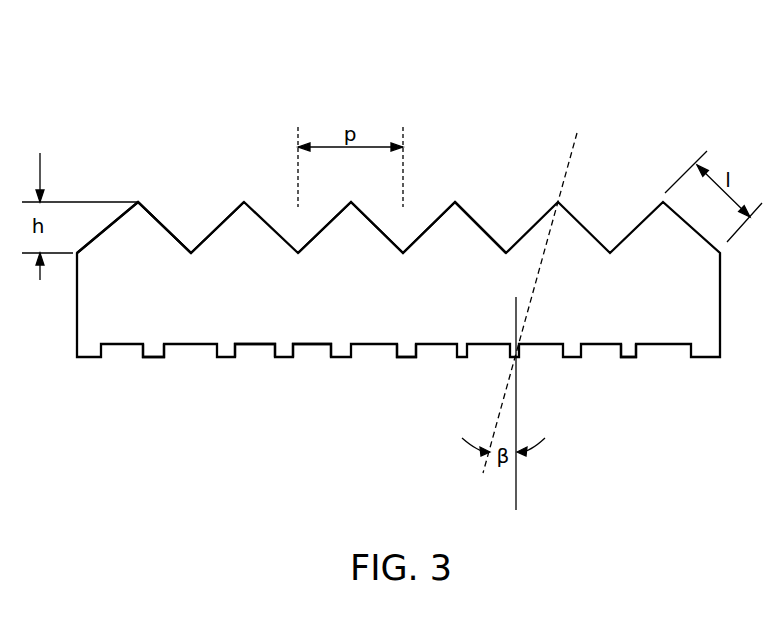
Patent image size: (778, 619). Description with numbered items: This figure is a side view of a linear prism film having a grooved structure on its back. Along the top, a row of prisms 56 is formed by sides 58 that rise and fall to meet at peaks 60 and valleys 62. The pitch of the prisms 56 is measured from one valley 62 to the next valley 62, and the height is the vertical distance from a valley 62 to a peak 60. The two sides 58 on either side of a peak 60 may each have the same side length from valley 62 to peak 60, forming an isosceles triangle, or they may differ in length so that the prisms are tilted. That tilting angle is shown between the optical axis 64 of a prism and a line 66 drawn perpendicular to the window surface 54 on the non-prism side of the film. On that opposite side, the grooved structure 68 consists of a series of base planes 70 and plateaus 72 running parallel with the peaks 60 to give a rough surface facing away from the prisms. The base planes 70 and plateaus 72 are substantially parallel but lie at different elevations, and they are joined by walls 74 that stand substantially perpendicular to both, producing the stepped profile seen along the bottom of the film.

The window surface 54 is at (154, 358).
The prisms 56 is at (470, 213).
The sides 58 is at (360, 210).
The peak 60 is at (138, 201).
The valley 62 is at (192, 251).
The optical axis 64 is at (500, 414).
The line perpendicular to window side 66 is at (516, 485).
The grooved structure 68 is at (626, 358).
The base planes 70 is at (313, 346).
The plateaus 72 is at (405, 358).
The walls 74 is at (272, 349).